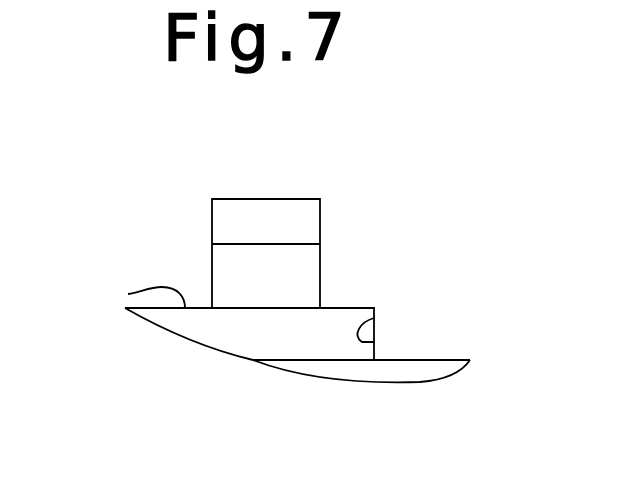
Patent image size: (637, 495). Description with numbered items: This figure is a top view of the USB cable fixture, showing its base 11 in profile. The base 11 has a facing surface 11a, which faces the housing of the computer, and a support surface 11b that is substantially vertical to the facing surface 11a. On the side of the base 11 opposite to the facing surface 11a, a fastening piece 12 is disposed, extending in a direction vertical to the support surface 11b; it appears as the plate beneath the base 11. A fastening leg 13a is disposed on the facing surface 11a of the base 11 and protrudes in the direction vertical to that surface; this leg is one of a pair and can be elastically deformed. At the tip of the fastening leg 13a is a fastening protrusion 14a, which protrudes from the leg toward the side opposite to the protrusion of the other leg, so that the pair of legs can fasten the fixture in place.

The base 11 is at (253, 345).
The fastening piece 12 is at (418, 380).
The facing surface 11a is at (128, 294).
The support surface 11b is at (374, 318).
The fastening leg 13a is at (228, 269).
The fastening protrusion 14a is at (283, 220).